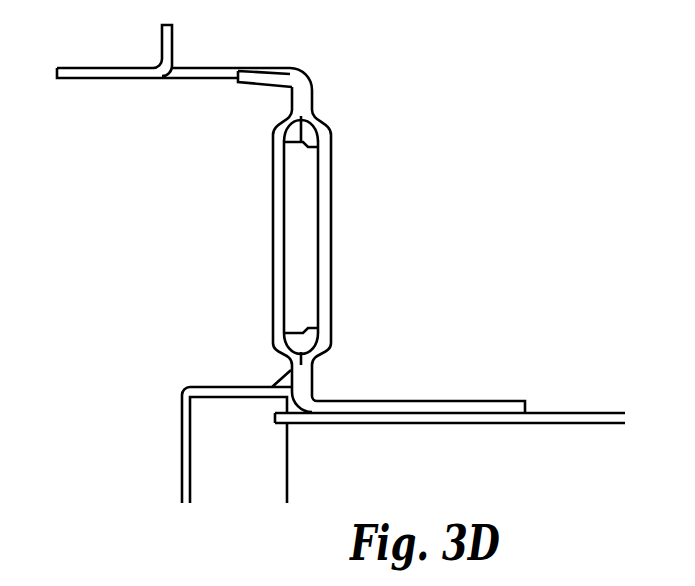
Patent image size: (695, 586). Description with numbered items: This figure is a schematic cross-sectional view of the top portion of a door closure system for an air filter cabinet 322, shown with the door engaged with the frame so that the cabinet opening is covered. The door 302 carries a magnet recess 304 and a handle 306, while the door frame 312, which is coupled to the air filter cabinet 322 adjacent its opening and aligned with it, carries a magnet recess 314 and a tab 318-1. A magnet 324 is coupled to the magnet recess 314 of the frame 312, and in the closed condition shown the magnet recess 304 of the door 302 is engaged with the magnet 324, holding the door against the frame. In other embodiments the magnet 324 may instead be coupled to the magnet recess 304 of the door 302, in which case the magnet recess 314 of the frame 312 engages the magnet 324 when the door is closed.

The door 302 is at (186, 432).
The magnet recess 304 is at (299, 240).
The handle 306 is at (103, 73).
The door frame 312 is at (413, 405).
The magnet recess 314 is at (323, 277).
The tab 318-1 is at (275, 80).
The air filter cabinet 322 is at (567, 418).
The magnet 324 is at (303, 232).